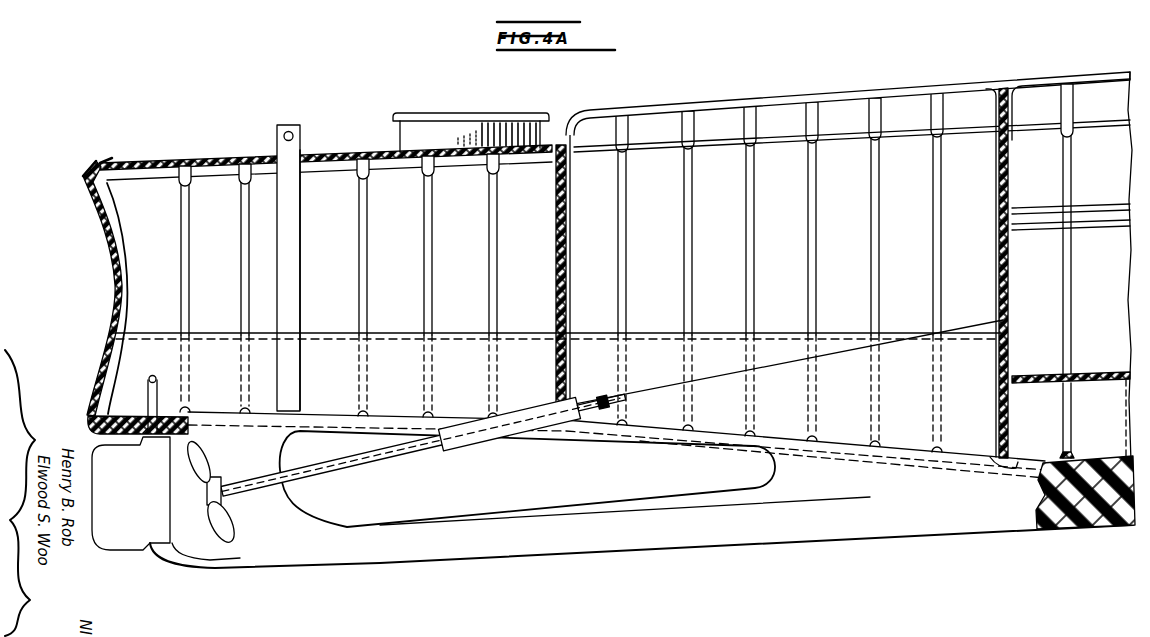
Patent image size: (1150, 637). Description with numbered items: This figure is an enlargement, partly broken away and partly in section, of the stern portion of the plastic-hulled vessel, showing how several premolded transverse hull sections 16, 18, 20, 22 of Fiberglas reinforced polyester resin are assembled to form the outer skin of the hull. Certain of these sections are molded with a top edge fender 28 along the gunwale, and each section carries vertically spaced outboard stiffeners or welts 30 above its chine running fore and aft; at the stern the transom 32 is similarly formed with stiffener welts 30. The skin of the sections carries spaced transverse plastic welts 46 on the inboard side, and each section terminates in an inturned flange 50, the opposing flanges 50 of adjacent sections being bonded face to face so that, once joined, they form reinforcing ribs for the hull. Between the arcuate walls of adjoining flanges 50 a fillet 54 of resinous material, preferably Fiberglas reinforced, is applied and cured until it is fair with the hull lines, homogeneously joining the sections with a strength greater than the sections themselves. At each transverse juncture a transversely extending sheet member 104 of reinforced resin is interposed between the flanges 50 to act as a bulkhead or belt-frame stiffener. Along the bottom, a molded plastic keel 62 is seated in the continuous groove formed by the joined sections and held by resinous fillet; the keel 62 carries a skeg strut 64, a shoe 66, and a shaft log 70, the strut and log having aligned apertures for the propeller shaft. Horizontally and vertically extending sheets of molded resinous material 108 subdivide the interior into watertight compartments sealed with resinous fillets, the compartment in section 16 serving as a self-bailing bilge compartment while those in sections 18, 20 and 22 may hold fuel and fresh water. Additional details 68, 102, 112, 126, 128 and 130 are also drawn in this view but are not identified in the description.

The hull section 16 is at (1088, 73).
The hull section 18 is at (797, 96).
The hull section 20 is at (345, 150).
The hull section 22 is at (180, 157).
The top edge fender 28 is at (83, 175).
The outboard stiffener welt 30 is at (98, 240).
The transom 32 is at (107, 160).
The transverse plastic welt 46 is at (127, 255).
The flange 50 is at (1014, 86).
The fillet 54 is at (1001, 82).
The keel 62 is at (872, 540).
The skeg strut 64 is at (293, 512).
The shoe 66 is at (175, 566).
The ventilator cap 68 is at (426, 112).
The shaft log 70 is at (480, 440).
The control rod 102 is at (890, 336).
The transversely extending sheet member 104 is at (306, 272).
The sheet of molded resinous material 108 is at (210, 330).
The cross bar 112 is at (1080, 373).
The lower post 126 is at (1072, 394).
The rudder bracket 128 is at (123, 535).
The rudder post 130 is at (158, 377).